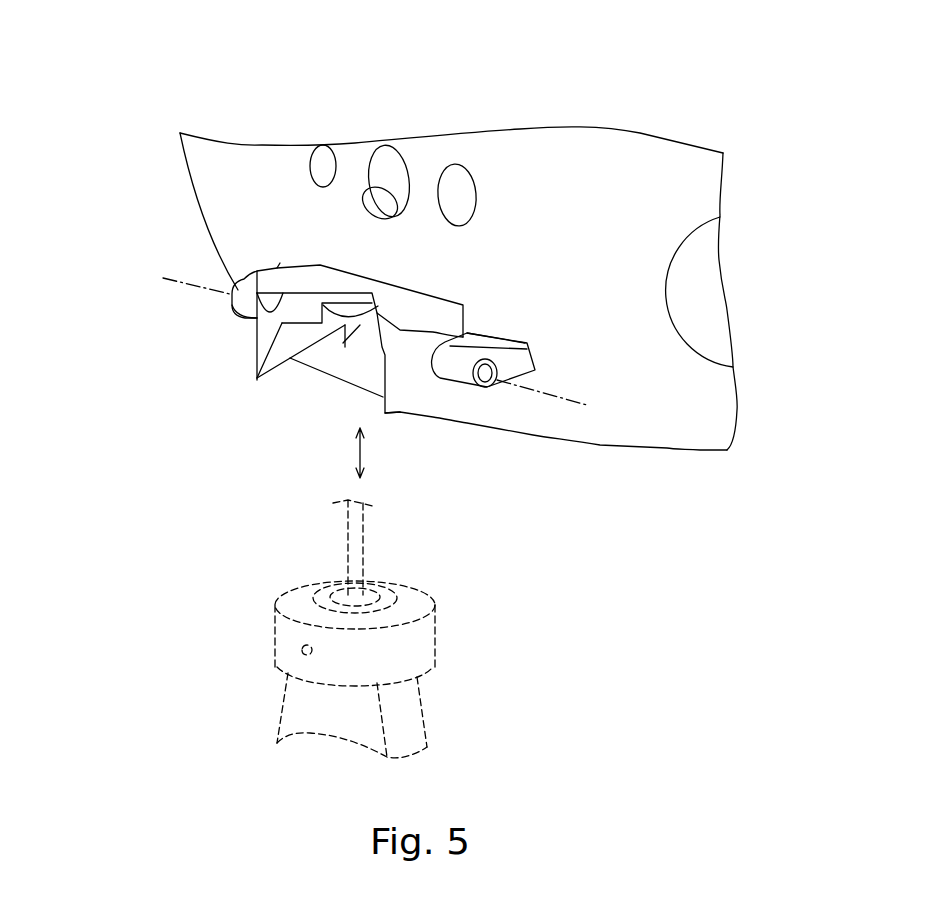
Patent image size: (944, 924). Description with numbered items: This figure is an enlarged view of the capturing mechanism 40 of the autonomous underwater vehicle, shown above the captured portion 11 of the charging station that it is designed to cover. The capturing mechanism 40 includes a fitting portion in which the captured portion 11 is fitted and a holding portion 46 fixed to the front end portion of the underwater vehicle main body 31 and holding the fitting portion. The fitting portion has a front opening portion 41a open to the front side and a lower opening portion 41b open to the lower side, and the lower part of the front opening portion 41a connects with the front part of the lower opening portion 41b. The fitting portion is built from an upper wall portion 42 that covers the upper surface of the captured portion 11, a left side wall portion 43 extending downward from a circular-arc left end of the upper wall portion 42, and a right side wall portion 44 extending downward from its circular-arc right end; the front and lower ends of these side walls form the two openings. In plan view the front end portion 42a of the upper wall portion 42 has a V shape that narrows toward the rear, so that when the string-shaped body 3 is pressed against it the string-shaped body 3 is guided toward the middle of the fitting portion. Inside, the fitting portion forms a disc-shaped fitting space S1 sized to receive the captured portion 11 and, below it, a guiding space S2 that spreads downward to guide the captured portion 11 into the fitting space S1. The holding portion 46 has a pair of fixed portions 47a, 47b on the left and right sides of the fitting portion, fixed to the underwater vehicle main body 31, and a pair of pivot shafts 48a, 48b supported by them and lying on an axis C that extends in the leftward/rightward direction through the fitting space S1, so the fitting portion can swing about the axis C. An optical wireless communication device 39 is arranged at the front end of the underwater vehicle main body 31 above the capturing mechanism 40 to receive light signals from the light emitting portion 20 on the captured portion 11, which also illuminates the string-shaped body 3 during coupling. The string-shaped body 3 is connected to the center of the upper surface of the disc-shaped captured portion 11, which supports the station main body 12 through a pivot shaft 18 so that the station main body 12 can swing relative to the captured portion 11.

The underwater vehicle main body 31 is at (665, 448).
The optical wireless communication device 39 is at (376, 197).
The upper wall portion 42 is at (303, 281).
The front end portion 42a is at (240, 303).
The left side wall portion 43 is at (413, 385).
The capturing mechanism 40 is at (404, 416).
The front opening portion 41a is at (257, 351).
The lower opening portion 41b is at (284, 370).
The right side wall portion 44 is at (257, 333).
The pivot shaft 48b is at (238, 303).
The fixed portion 47a is at (527, 377).
The fixed portion 47b is at (277, 272).
The pivot shaft 48a is at (488, 388).
The holding portion 46 is at (470, 388).
The axis C is at (568, 410).
The fitting space S1 is at (345, 348).
The guiding space S2 is at (360, 360).
The string-shaped body 3 is at (345, 550).
The light emitting portion 20 is at (283, 595).
The captured portion 11 is at (437, 638).
The pivot shaft 18 is at (300, 651).
The station main body 12 is at (283, 717).